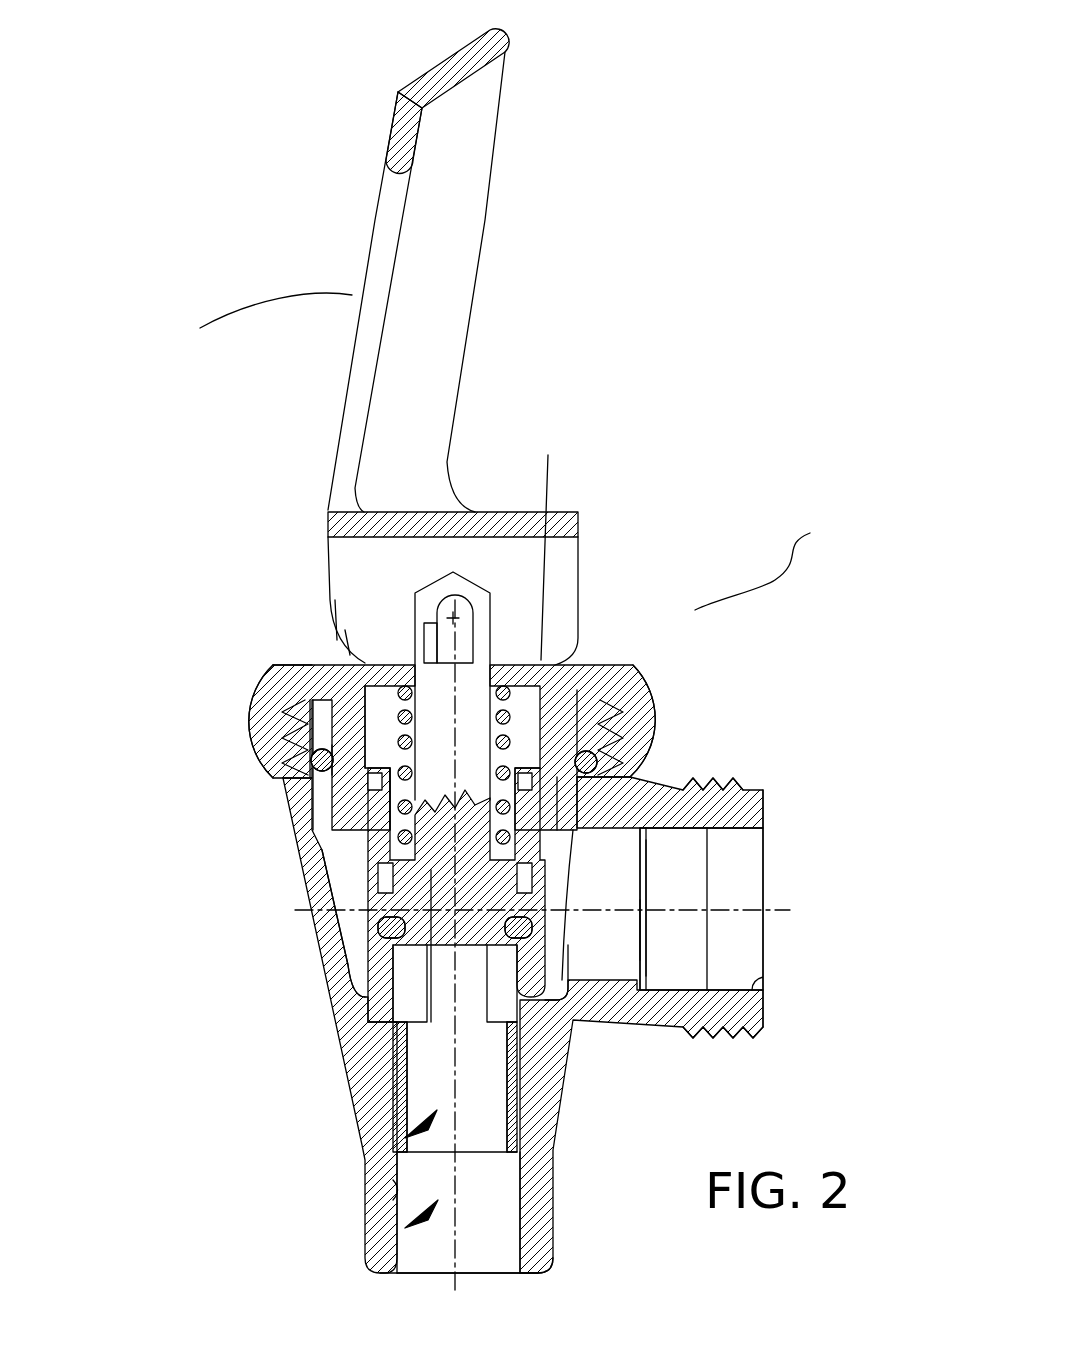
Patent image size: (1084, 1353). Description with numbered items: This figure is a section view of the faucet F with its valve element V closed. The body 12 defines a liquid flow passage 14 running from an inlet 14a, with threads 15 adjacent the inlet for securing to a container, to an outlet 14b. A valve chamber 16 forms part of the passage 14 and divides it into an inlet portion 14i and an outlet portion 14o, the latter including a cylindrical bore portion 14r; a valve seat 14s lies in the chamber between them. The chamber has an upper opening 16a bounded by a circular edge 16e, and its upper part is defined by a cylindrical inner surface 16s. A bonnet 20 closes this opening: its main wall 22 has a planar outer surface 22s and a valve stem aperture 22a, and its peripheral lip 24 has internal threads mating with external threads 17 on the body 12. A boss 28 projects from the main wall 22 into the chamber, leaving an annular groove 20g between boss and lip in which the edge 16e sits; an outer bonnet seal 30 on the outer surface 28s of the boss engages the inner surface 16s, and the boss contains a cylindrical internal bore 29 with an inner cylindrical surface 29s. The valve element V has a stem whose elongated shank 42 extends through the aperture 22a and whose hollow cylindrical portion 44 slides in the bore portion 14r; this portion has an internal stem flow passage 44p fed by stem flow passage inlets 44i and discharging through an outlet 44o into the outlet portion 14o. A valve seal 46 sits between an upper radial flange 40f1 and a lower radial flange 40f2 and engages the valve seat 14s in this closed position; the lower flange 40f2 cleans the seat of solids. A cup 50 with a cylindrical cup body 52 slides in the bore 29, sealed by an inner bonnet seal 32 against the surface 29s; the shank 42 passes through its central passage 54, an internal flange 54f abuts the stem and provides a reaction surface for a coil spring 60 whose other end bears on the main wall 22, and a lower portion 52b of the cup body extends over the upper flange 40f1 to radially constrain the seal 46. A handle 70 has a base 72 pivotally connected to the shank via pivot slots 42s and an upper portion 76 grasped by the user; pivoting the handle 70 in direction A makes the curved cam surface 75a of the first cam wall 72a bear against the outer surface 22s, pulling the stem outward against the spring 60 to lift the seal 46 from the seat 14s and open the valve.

The handle 70 is at (449, 270).
The upper portion 76 is at (460, 197).
The direction A is at (283, 293).
The faucet F is at (755, 567).
The handle base 72 is at (577, 512).
The first cam wall 72a is at (567, 557).
The valve stem aperture 22a is at (553, 543).
The curved cam surface 75a is at (337, 622).
The inner cylindrical surface 29s is at (350, 655).
The shank 42 is at (468, 916).
The pivot slots 42s is at (462, 615).
The main wall 22 is at (543, 668).
The planar outer surface 22s is at (306, 655).
The bonnet 20 is at (262, 702).
The annular groove 20g is at (262, 726).
The external threads 17 is at (290, 746).
The peripheral lip 24 is at (642, 727).
The circular edge 16e is at (615, 668).
The upper opening 16a is at (583, 660).
The inner bonnet seal 32 is at (391, 765).
The coil spring 60 is at (497, 720).
The cylindrical internal bore 29 is at (392, 672).
The boss 28 is at (322, 772).
The outer surface 28s is at (318, 776).
The outer bonnet seal 30 is at (612, 790).
The body 12 is at (501, 1025).
The valve chamber 16 is at (333, 858).
The valve seal 46 is at (360, 960).
The upper radial flange 40f1 is at (560, 915).
The lower radial flange 40f2 is at (545, 972).
The inner surface 16s is at (663, 909).
The liquid flow passage 14 is at (702, 888).
The threads 15 is at (700, 788).
The inlet portion 14i is at (705, 858).
The valve seat 14s is at (548, 935).
The inlet 14a is at (763, 985).
The central passage 54 is at (406, 888).
The cup 50 is at (370, 888).
The lower portion 52b is at (385, 932).
The cylindrical cup body 52 is at (540, 858).
The internal flange 54f is at (433, 966).
The valve element V is at (340, 913).
The hollow cylindrical portion 44 is at (458, 1141).
The stem flow passage inlets 44i is at (437, 1010).
The internal stem flow passage 44p is at (397, 1143).
The stem flow passage outlet 44o is at (490, 1137).
The cylindrical bore portion 14r is at (395, 1193).
The outlet portion 14o is at (397, 1245).
The outlet 14b is at (555, 1275).